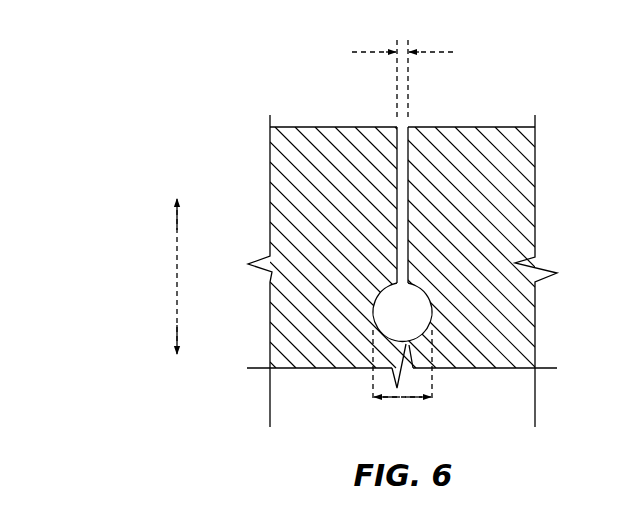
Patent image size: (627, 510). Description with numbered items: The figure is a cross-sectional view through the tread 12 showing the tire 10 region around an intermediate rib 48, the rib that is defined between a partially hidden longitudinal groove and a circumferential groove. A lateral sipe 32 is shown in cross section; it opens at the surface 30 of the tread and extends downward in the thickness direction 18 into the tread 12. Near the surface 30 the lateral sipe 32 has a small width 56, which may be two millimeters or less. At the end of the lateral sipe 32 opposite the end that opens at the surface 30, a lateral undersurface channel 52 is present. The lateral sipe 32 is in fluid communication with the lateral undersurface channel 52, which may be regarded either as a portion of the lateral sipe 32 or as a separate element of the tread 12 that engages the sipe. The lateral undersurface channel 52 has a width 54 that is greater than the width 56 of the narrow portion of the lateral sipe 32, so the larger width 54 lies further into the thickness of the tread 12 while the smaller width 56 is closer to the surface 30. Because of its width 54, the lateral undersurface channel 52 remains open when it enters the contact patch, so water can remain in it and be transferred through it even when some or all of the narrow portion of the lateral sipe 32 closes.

The assembly 10 is at (216, 103).
The tread 12 is at (285, 302).
The thickness direction 18 is at (175, 278).
The surface 30 is at (340, 125).
The lateral sipe 32 is at (407, 178).
The intermediate rib 48 is at (527, 163).
The lateral undersurface channel 52 is at (415, 325).
The width 54 is at (403, 400).
The width 56 is at (433, 52).